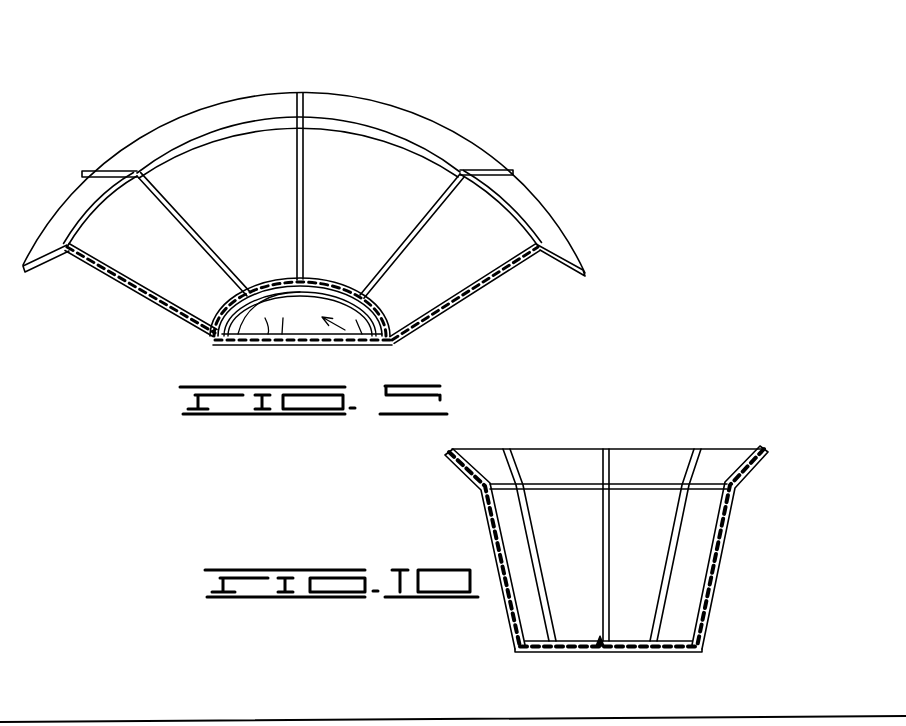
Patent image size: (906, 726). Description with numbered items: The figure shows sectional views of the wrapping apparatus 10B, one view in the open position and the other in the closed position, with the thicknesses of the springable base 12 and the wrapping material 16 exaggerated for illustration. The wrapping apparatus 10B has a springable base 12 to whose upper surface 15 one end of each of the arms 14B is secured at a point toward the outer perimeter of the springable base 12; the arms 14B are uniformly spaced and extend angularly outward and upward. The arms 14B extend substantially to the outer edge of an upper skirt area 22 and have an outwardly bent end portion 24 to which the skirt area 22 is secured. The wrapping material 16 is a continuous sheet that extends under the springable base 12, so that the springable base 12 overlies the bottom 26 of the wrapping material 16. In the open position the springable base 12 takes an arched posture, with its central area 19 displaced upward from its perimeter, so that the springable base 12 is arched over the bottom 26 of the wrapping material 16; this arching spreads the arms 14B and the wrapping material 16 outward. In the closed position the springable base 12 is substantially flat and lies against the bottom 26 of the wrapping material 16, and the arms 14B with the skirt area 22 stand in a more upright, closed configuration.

In FIG. 9, the wrapping apparatus 10B is at (202, 88).
In FIG. 10, the wrapping apparatus 10B is at (622, 430).
In FIG. 9, the springable base 12 is at (387, 343).
In FIG. 10, the springable base 12 is at (603, 650).
In FIG. 9, the arms 14B is at (172, 212).
In FIG. 10, the arms 14B is at (502, 498).
In FIG. 9, the upper surface 15 is at (267, 280).
In FIG. 10, the upper surface 15 is at (633, 636).
In FIG. 9, the wrapping material 16 is at (125, 290).
In FIG. 10, the wrapping material 16 is at (488, 512).
In FIG. 9, the central area 19 is at (318, 280).
In FIG. 9, the upper skirt area 22 is at (323, 100).
In FIG. 10, the upper skirt area 22 is at (637, 462).
In FIG. 9, the outwardly bent end portion 24 is at (115, 173).
In FIG. 10, the outwardly bent end portion 24 is at (473, 457).
In FIG. 9, the bottom 26 is at (250, 345).
In FIG. 10, the bottom 26 is at (550, 652).